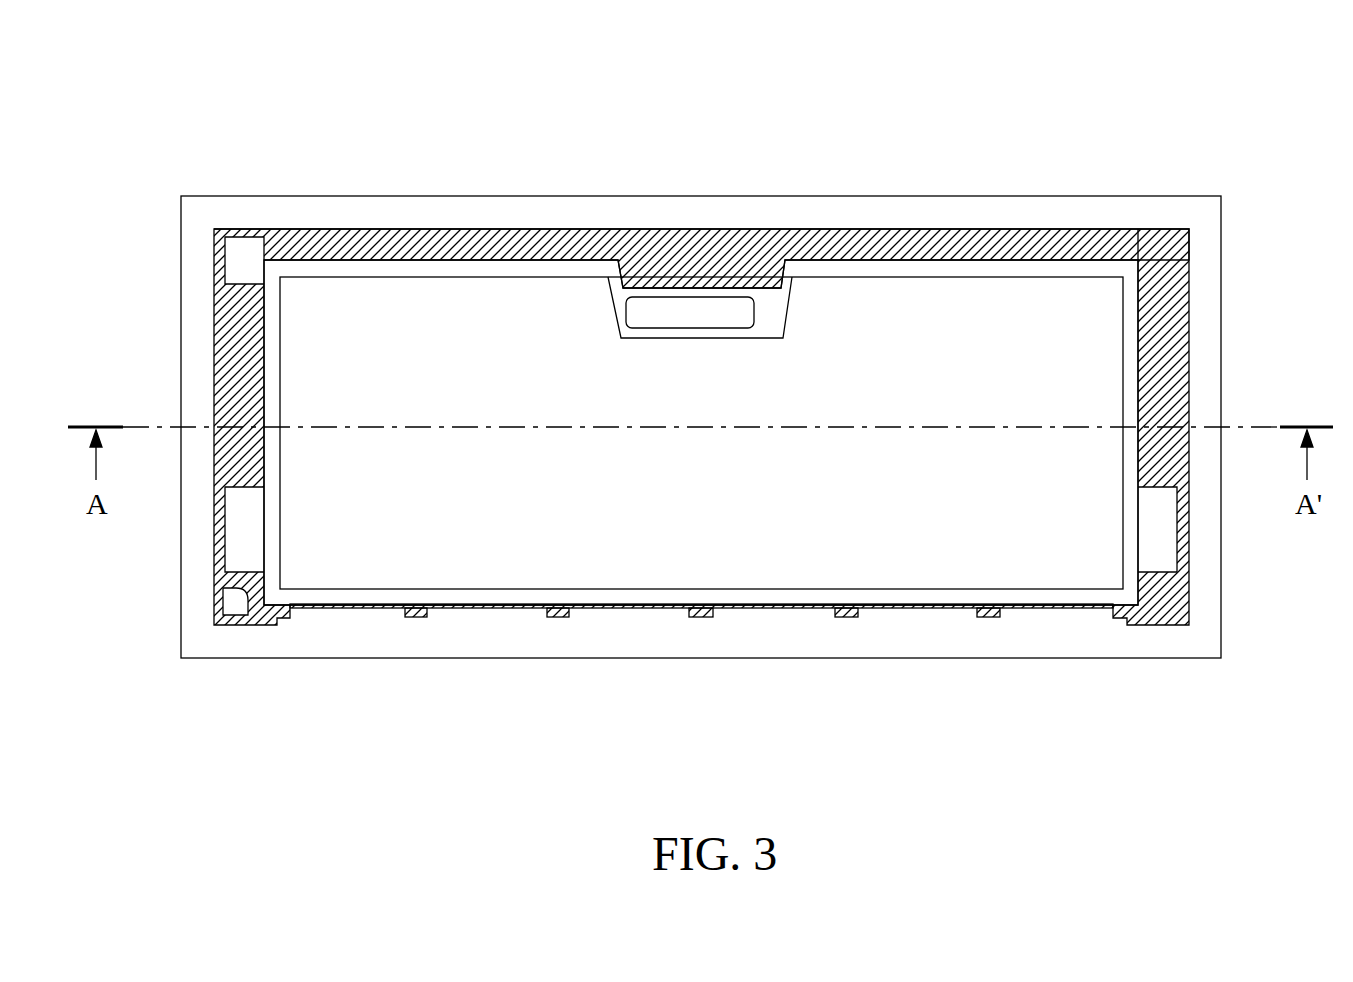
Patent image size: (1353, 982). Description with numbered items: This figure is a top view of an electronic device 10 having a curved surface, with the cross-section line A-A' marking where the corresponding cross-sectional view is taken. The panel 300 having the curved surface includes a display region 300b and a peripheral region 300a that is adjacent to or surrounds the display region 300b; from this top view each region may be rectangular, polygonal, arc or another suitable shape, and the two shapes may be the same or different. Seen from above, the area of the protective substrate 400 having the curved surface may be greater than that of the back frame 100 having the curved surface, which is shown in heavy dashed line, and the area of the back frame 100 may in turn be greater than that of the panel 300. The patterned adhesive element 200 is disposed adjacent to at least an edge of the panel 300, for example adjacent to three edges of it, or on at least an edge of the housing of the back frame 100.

The electronic device 10 is at (134, 129).
The back frame 100 is at (698, 229).
The patterned adhesive element 200 is at (818, 247).
The panel 300 is at (1115, 121).
The peripheral region 300a is at (1078, 268).
The display region 300b is at (970, 325).
The protective substrate 400 is at (1221, 215).